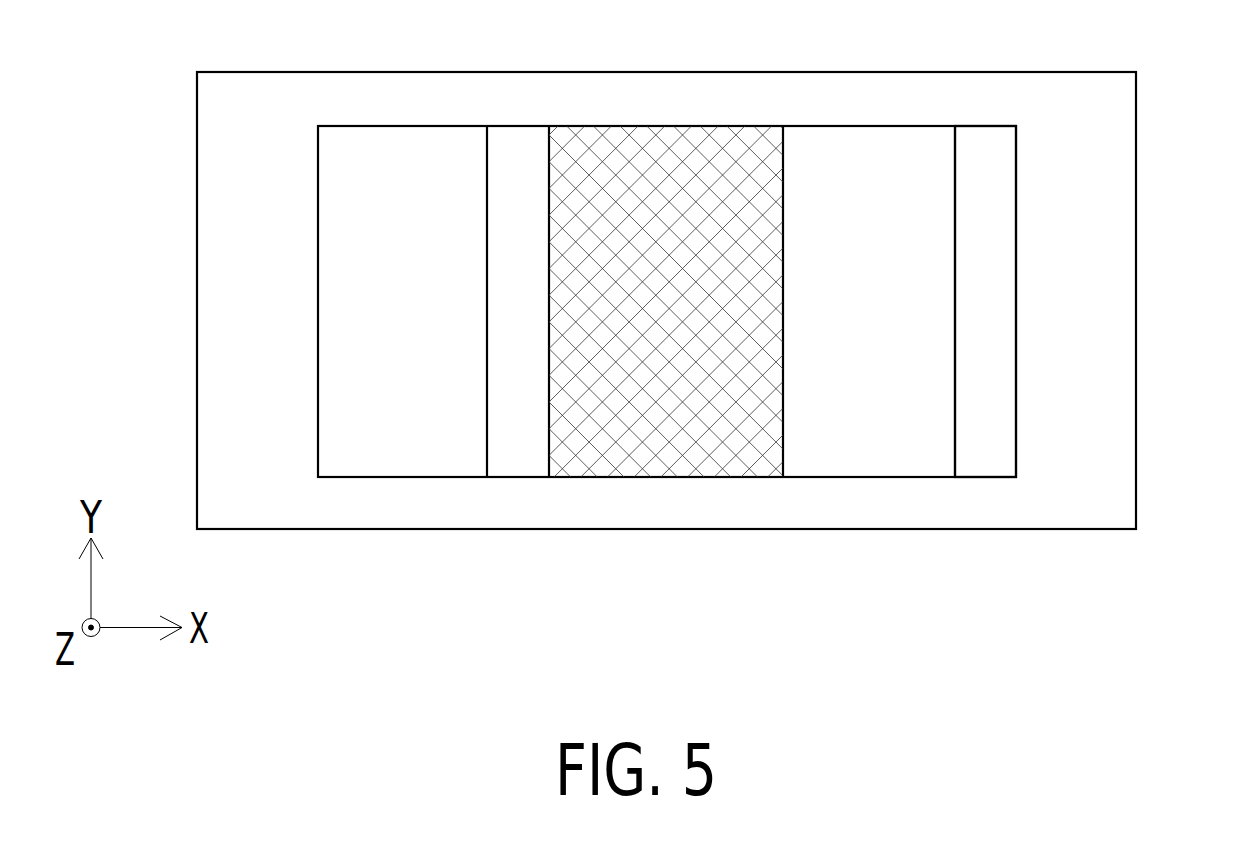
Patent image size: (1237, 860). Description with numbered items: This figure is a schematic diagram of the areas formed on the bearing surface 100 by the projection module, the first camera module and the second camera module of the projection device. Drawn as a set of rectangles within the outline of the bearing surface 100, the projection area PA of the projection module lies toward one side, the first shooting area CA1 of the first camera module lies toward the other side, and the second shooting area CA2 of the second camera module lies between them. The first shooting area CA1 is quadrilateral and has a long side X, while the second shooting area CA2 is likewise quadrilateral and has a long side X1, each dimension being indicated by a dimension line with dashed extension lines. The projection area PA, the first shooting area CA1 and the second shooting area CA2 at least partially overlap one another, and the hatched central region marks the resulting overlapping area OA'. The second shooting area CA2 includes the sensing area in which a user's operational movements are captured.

The bearing surface 100 is at (1101, 188).
The projection area PA is at (400, 318).
The first shooting area CA1 is at (1012, 319).
The second shooting area CA2 is at (894, 319).
The overlapping area OA' is at (708, 378).
The long side X is at (549, 126).
The long side X1 is at (955, 477).